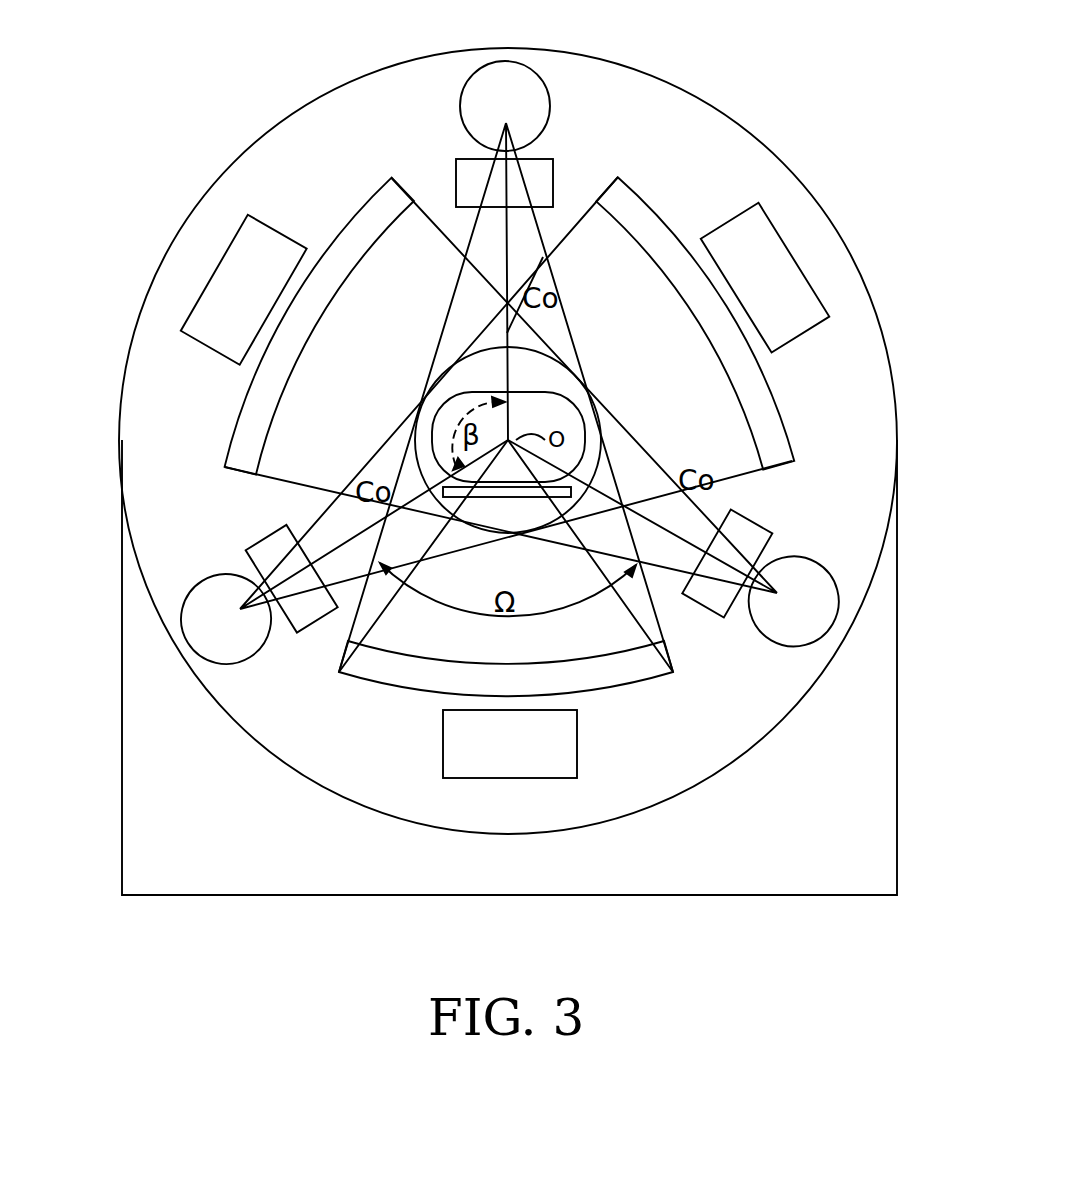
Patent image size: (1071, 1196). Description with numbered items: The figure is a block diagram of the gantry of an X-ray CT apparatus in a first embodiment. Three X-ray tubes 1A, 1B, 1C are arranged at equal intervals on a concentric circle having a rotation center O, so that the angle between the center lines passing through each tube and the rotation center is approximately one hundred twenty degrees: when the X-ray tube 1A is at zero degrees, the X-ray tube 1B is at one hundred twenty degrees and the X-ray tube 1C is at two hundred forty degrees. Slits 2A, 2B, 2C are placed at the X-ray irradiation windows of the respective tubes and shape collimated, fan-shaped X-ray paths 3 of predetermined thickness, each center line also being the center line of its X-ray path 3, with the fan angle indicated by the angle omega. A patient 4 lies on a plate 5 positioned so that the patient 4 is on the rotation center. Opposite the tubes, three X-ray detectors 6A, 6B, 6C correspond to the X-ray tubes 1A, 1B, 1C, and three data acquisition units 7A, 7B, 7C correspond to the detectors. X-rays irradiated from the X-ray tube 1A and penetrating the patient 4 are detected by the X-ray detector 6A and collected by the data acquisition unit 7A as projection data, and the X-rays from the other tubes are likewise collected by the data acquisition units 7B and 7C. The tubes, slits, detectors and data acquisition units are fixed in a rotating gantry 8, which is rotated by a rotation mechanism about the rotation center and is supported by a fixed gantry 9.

The X-ray tube 1A is at (537, 80).
The X-ray tube 1B is at (800, 578).
The X-ray tube 1C is at (200, 640).
The slit 2A is at (533, 170).
The slit 2B is at (748, 537).
The slit 2C is at (265, 540).
The X-ray path 3 is at (550, 225).
The patient 4 is at (547, 413).
The top plate of bed 5 is at (572, 492).
The X-ray detector 6A is at (605, 673).
The X-ray detector 6B is at (357, 228).
The X-ray detector 6C is at (765, 415).
The data acquisition unit 7A is at (568, 752).
The data acquisition unit 7B is at (262, 230).
The data acquisition unit 7C is at (720, 238).
The rotating gantry 8 is at (748, 730).
The fixed gantry 9 is at (795, 896).